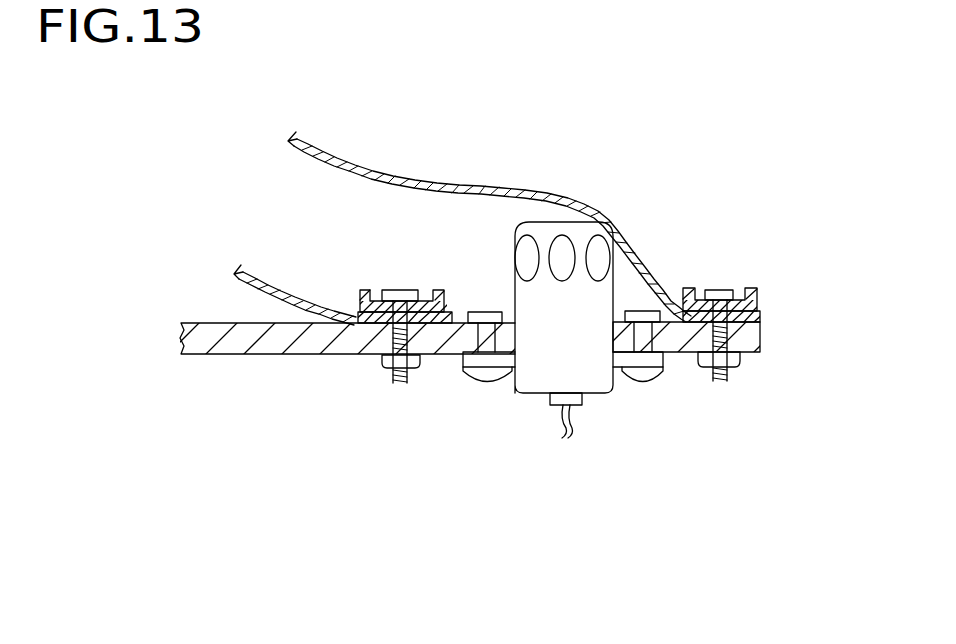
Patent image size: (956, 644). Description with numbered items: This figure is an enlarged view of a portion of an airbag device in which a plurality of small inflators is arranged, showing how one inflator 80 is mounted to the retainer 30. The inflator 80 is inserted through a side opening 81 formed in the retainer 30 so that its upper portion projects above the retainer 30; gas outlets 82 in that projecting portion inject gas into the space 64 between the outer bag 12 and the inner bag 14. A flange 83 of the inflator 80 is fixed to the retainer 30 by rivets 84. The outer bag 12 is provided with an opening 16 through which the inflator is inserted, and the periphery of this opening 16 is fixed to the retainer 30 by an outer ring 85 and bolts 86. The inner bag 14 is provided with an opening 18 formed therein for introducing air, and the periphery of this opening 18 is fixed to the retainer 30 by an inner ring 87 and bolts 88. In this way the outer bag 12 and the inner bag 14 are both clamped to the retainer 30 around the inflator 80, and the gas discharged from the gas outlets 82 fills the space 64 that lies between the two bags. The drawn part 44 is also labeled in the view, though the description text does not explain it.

The belt sheet 12 is at (258, 272).
The belt sheet 14 is at (372, 176).
The plate 16 is at (450, 318).
The plate 18 is at (762, 311).
The base plate 30 is at (268, 356).
The base plate 44 is at (762, 340).
The sensor unit 64 is at (284, 182).
The sensor 80 is at (568, 314).
The sensor housing 81 is at (523, 330).
The openings 82 is at (523, 260).
The mounting bracket 83 is at (462, 360).
The bolts 84 is at (487, 382).
The clamp 85 is at (358, 293).
The bolt 86 is at (396, 384).
The clamp 87 is at (746, 290).
The bolt 88 is at (720, 382).